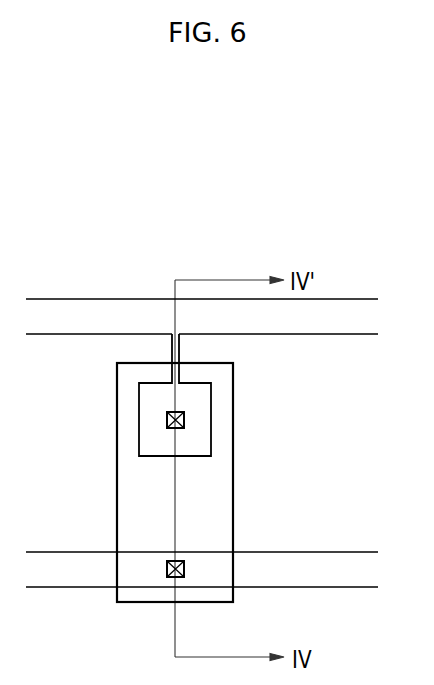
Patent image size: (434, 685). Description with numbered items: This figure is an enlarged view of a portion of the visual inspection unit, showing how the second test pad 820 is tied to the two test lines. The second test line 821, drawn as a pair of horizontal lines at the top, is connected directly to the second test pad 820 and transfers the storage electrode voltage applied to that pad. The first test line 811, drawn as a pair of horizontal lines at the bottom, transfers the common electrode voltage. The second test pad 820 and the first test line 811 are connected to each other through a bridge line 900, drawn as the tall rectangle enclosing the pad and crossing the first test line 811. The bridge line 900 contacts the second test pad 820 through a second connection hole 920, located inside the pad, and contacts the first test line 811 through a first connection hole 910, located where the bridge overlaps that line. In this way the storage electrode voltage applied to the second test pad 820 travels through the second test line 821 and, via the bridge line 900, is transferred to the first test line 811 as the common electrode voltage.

The second test line 821 is at (336, 299).
The first test line 811 is at (352, 588).
The bridge line 900 is at (233, 485).
The second test pad 820 is at (211, 407).
The second connection hole 920 is at (167, 418).
The first connection hole 910 is at (167, 569).